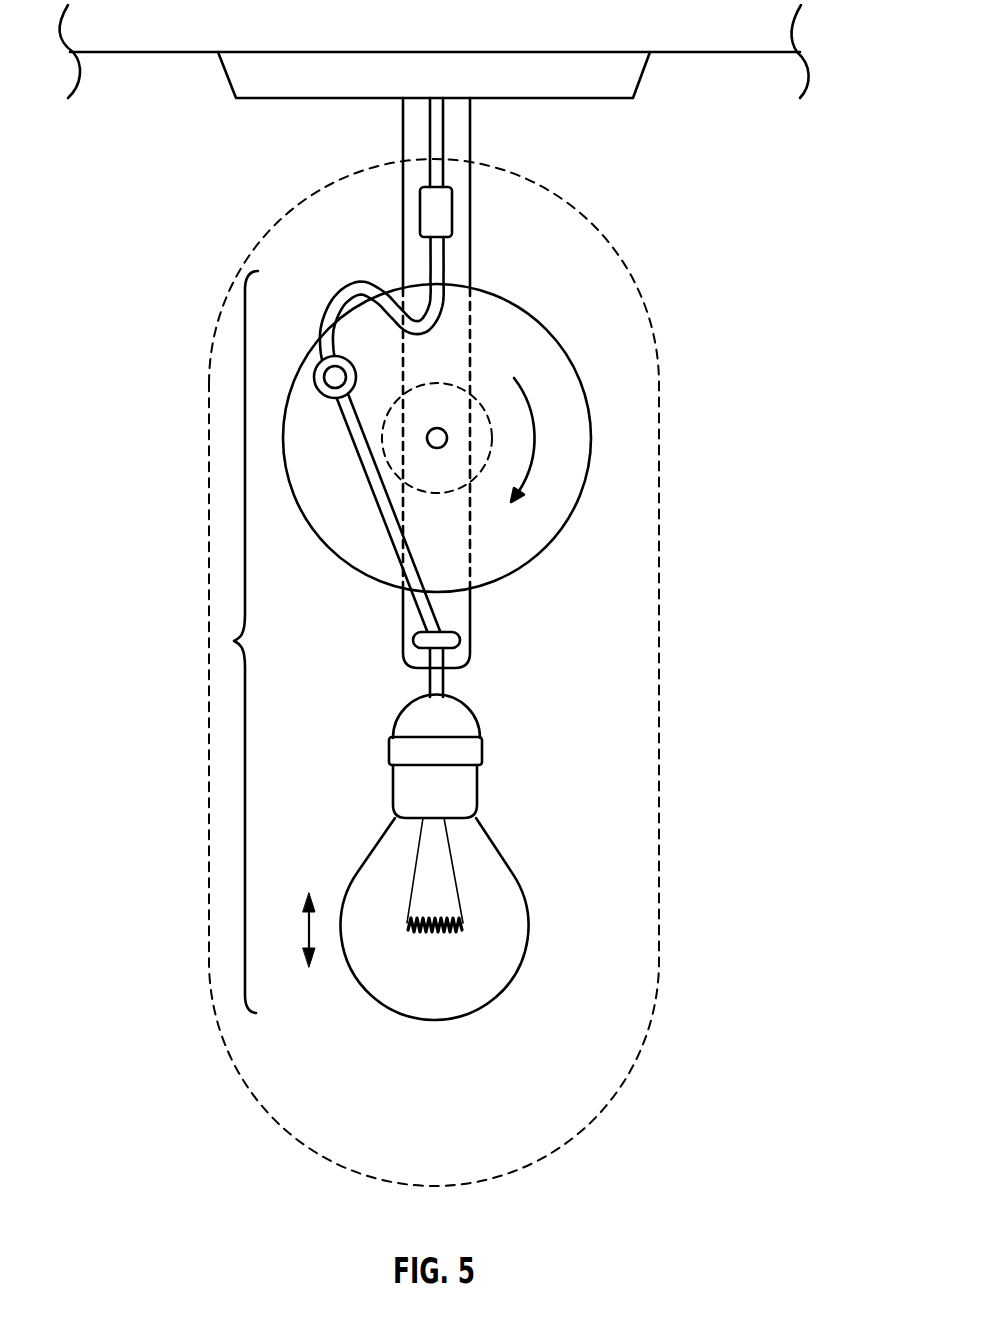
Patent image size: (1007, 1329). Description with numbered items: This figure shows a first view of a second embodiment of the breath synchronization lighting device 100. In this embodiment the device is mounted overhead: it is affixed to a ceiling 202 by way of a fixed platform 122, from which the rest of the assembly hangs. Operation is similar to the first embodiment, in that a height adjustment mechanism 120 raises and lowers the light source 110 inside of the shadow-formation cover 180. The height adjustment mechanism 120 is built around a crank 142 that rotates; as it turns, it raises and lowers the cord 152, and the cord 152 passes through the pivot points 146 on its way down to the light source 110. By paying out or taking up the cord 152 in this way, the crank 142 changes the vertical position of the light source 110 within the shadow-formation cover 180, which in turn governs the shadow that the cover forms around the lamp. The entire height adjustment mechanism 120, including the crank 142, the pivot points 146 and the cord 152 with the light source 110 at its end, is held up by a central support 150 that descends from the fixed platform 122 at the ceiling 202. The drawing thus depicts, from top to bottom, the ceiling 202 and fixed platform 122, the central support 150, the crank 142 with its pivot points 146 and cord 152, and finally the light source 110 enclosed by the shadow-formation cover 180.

The breath synchronization lighting device 100 is at (779, 196).
The light source 110 is at (493, 913).
The height adjustment mechanism 120 is at (234, 641).
The fixed platform 122 is at (520, 68).
The crank 142 is at (560, 443).
The pivot points 146 is at (334, 377).
The central support 150 is at (413, 123).
The cord 152 is at (437, 685).
The shadow-formation cover 180 is at (659, 712).
The ceiling 202 is at (717, 53).